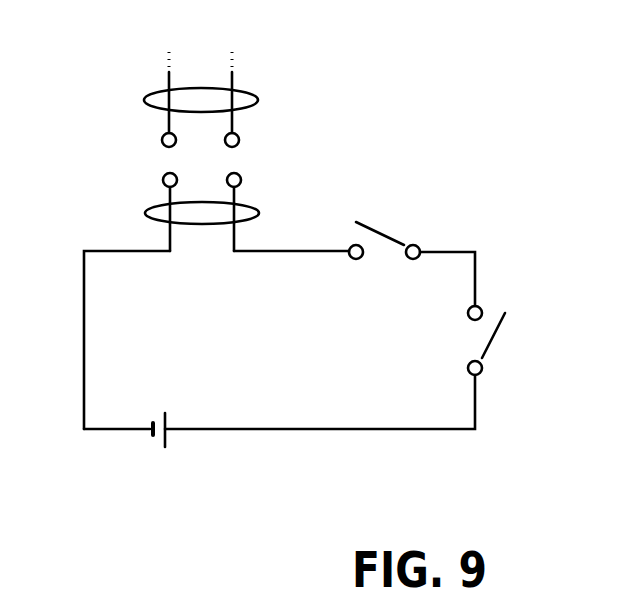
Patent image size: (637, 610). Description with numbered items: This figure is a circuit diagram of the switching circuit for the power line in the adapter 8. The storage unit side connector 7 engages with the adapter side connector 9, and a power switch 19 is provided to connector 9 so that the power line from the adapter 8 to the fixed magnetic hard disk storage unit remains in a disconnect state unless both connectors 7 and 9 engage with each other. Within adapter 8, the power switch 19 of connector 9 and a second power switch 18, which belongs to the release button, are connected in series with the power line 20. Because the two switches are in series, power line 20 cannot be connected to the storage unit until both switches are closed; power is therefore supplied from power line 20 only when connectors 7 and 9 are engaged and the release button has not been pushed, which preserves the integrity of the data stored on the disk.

The connector 7 is at (147, 100).
The connector 9 is at (149, 213).
The power switch 19 is at (387, 231).
The adapter 8 is at (534, 293).
The power switch 18 is at (494, 337).
The power line 20 is at (323, 432).